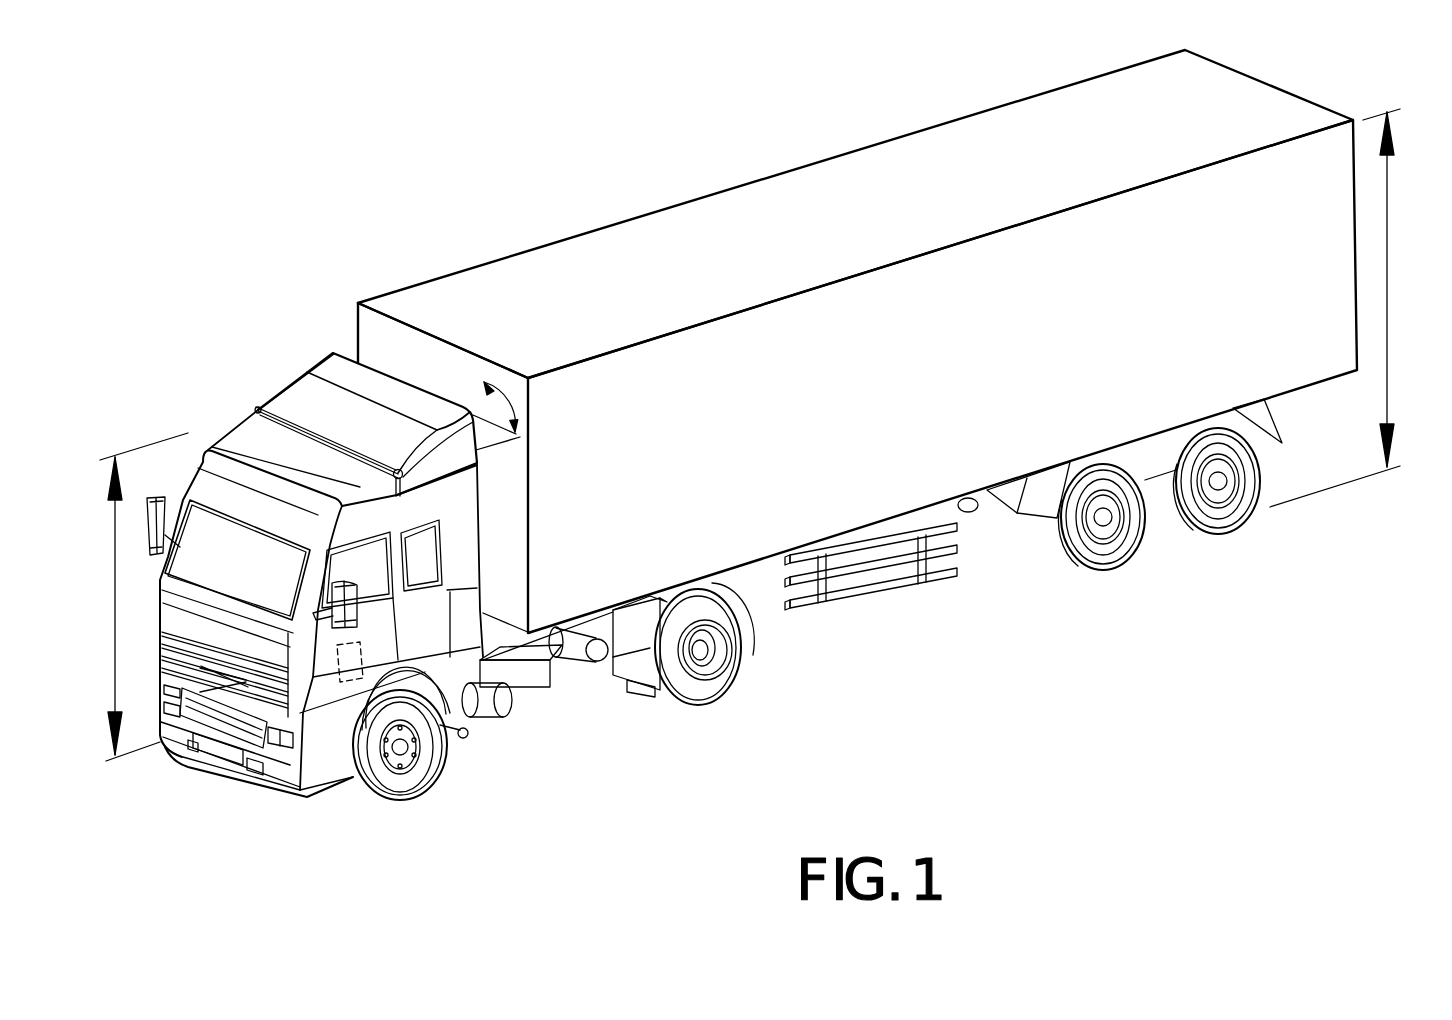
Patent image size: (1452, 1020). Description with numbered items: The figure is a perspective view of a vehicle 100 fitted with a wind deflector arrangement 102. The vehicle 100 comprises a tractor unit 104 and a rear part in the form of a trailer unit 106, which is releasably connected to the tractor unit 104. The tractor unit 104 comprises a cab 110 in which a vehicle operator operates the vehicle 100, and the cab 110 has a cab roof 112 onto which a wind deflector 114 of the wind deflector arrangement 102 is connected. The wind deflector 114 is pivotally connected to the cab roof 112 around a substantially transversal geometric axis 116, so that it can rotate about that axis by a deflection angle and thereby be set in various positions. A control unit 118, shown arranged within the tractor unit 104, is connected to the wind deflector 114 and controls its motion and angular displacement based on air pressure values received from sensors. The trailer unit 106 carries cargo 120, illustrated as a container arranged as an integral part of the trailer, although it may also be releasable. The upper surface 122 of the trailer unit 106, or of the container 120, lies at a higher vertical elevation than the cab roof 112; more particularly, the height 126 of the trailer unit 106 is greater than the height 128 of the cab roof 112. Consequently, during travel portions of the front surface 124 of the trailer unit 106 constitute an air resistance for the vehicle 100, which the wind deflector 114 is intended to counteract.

The vehicle 100 is at (297, 305).
The wind deflector arrangement 102 is at (222, 384).
The tractor unit 104 is at (347, 831).
The trailer unit 106 is at (720, 119).
The cab 110 is at (430, 623).
The cab roof 112 is at (263, 449).
The wind deflector 114 is at (310, 407).
The substantially transversal geometric axis 116 is at (277, 396).
The control unit 118 is at (308, 800).
The cargo 120 is at (593, 270).
The upper surface 122 is at (423, 303).
The front surface 124 is at (373, 337).
The height 126 is at (1356, 308).
The height 128 is at (124, 597).